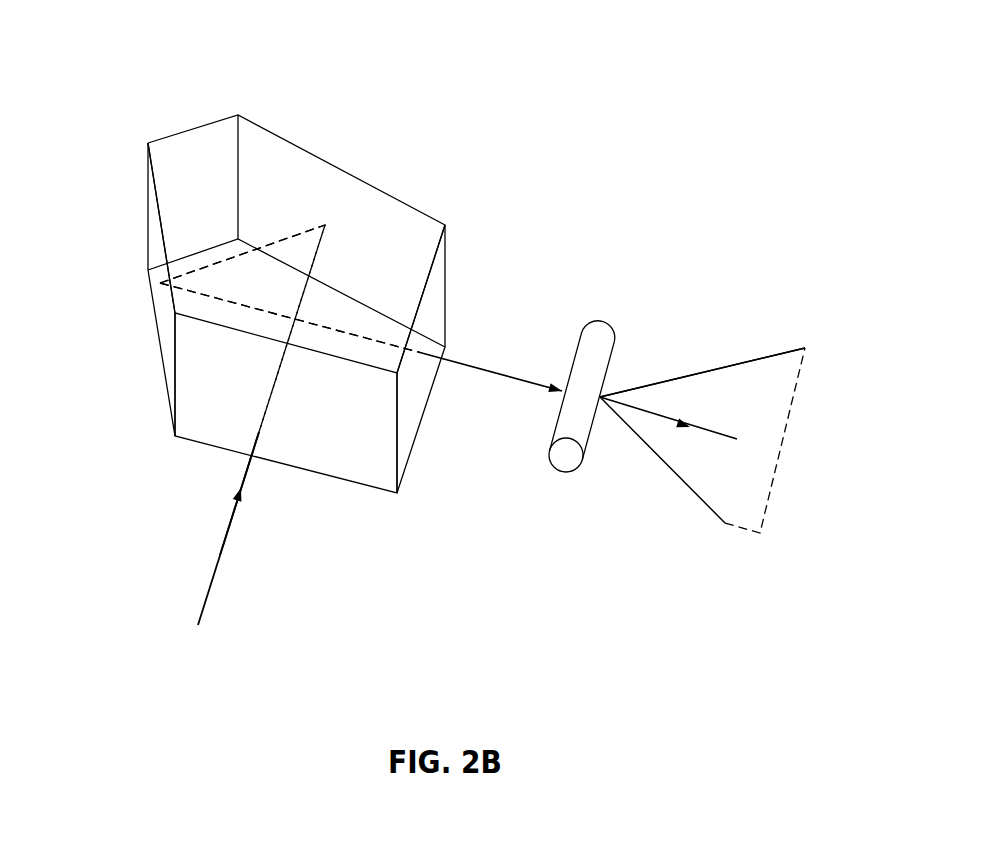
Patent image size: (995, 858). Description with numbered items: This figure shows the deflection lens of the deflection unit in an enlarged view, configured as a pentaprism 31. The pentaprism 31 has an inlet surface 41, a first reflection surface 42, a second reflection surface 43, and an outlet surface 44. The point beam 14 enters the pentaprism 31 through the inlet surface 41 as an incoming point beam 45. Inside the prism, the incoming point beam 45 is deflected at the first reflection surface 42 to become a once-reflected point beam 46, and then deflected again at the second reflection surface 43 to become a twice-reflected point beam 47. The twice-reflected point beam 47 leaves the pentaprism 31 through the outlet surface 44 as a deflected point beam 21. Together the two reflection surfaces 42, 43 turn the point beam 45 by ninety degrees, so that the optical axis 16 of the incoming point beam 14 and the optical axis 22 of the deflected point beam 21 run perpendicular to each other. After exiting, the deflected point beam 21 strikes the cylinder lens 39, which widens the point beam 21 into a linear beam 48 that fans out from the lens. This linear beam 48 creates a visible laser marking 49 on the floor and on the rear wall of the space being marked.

The point beam 14 is at (210, 585).
The optical axis of the incoming point beam 16 is at (227, 525).
The deflected point beam 21 is at (473, 365).
The optical axis of the deflected point beam 22 is at (522, 378).
The pentaprism 31 is at (271, 298).
The cylinder lens 39 is at (565, 457).
The inlet surface 41 is at (347, 462).
The first reflection surface 42 is at (287, 205).
The second reflection surface 43 is at (172, 317).
The outlet surface 44 is at (417, 392).
The incoming point beam 45 is at (277, 383).
The once-reflected point beam 46 is at (222, 263).
The twice-reflected point beam 47 is at (355, 333).
The linear beam 48 is at (695, 373).
The visible laser marking 49 is at (775, 465).